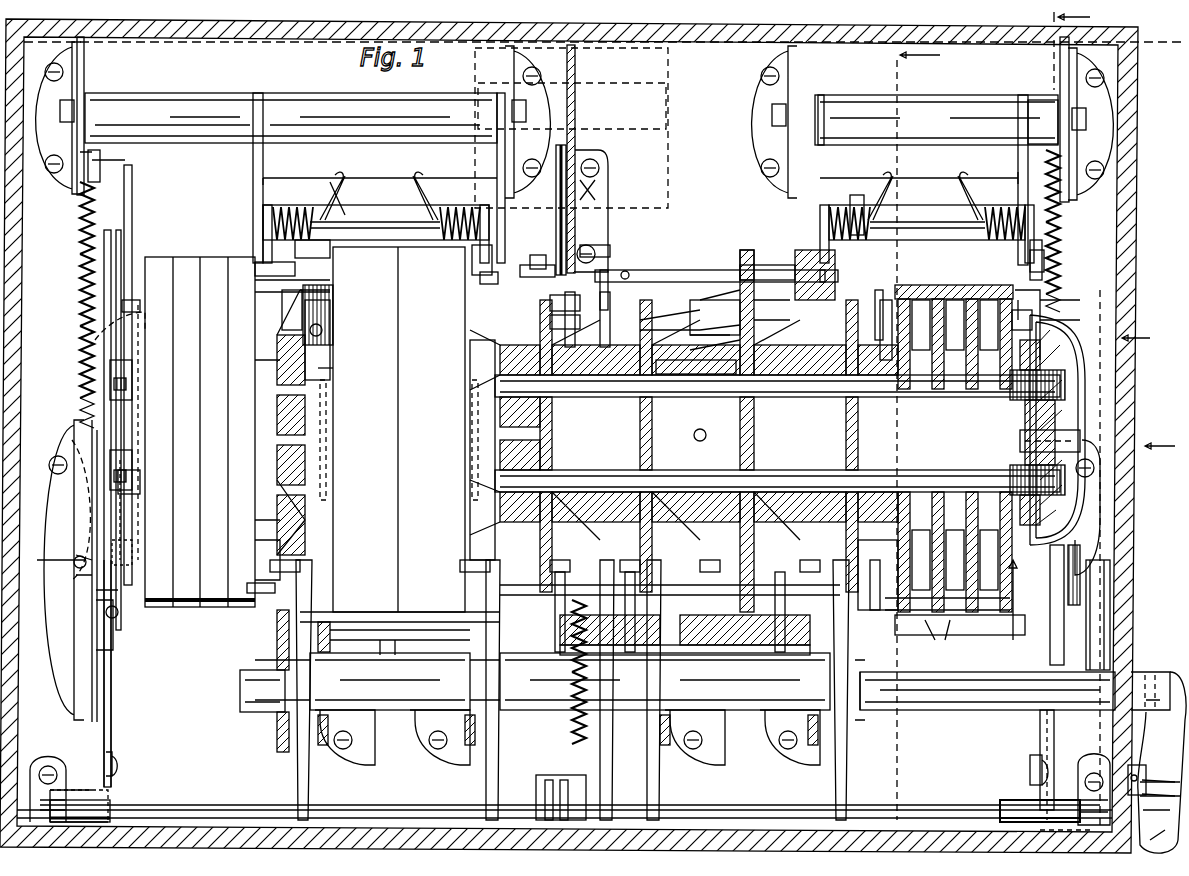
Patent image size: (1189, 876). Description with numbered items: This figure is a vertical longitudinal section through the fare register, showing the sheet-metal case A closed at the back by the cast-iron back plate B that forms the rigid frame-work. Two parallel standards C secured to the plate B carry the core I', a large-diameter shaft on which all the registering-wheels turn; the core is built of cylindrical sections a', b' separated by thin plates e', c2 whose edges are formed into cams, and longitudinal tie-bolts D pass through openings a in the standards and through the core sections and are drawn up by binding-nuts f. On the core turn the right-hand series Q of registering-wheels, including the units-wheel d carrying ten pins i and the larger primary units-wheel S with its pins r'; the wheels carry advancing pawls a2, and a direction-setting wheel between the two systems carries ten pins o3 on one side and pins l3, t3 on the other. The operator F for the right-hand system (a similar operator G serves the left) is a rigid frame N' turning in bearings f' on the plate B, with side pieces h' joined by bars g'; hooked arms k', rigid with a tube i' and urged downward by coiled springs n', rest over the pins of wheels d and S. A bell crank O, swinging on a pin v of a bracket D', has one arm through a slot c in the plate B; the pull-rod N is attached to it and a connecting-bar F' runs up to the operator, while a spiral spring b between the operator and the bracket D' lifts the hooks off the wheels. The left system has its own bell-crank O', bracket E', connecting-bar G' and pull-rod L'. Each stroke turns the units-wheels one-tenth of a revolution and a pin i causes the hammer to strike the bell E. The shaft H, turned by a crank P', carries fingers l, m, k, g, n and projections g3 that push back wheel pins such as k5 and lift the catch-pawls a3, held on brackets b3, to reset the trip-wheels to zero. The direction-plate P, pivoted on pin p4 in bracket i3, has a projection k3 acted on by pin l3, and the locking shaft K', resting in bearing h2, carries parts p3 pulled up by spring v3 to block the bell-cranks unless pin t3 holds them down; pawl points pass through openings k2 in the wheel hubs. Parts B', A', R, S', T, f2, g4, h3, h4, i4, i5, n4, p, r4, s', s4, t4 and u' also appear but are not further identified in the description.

The case A is at (592, 430).
The back plate B is at (453, 453).
The number drum B' is at (400, 447).
The drum support A' is at (335, 382).
The standards C is at (367, 496).
The longitudinal bolts D is at (777, 430).
The bracket D' is at (1098, 615).
The bell E is at (1065, 445).
The bracket E' is at (77, 571).
The operator F is at (942, 151).
The connecting-bar F' is at (1017, 428).
The operator G is at (291, 150).
The connecting-bar G' is at (124, 375).
The shaft H is at (685, 686).
The core I' is at (767, 431).
The locking shaft K' is at (564, 799).
The pull-rod L' is at (84, 776).
The pull-rod N is at (1029, 764).
The frame N' is at (873, 133).
The bell crank O is at (1065, 770).
The bell-crank lever O' is at (118, 673).
The direction plate P is at (571, 160).
The crank P' is at (1157, 762).
The series of registering-wheels Q is at (928, 634).
The bar R is at (762, 280).
The primary registering units-wheel S is at (523, 190).
The bar S' is at (809, 255).
The number strip T is at (199, 433).
The openings a is at (684, 430).
The core section a' is at (601, 316).
The advancing pawls a2 is at (935, 426).
The catch-pawls a3 is at (300, 550).
The spiral spring b is at (1062, 231).
The core section b' is at (715, 333).
The brackets b3 is at (573, 766).
The slot c is at (745, 366).
The separating plate c2 is at (922, 450).
The units wheel d is at (1008, 322).
The separating plate e' is at (709, 434).
The binding-nuts f is at (1045, 407).
The bearings f' is at (575, 121).
The pawls f2 is at (125, 432).
The finger g is at (841, 690).
The bar g' is at (287, 123).
The projections g3 is at (567, 697).
The spring g4 is at (651, 196).
The side pieces h' is at (638, 169).
The bearing h2 is at (1094, 789).
The block h3 is at (685, 635).
The bar h4 is at (668, 263).
The pins i is at (960, 447).
The cross rod i' is at (644, 230).
The bracket i3 is at (588, 222).
The pin i4 is at (810, 250).
The spring i5 is at (552, 703).
The finger k is at (573, 690).
The hooked arms k' is at (657, 222).
The openings k2 is at (287, 216).
The projection k3 is at (590, 262).
The pin k5 is at (238, 624).
The finger l is at (396, 690).
The outer pin l3 is at (555, 285).
The finger m is at (191, 512).
The finger n is at (609, 690).
The coiled springs n' is at (648, 223).
The pin n4 is at (1043, 431).
The pins o3 is at (634, 405).
The spring p is at (93, 289).
The stop parts p3 is at (104, 812).
The pivot-pin p4 is at (591, 192).
The pins r' is at (698, 394).
The pins r4 is at (978, 537).
The pin s' is at (530, 264).
The pin s4 is at (499, 434).
The pin t3 is at (552, 318).
The arrow t4 is at (1003, 644).
The plate u' is at (943, 625).
The pin v is at (1080, 568).
The spring v3 is at (694, 627).